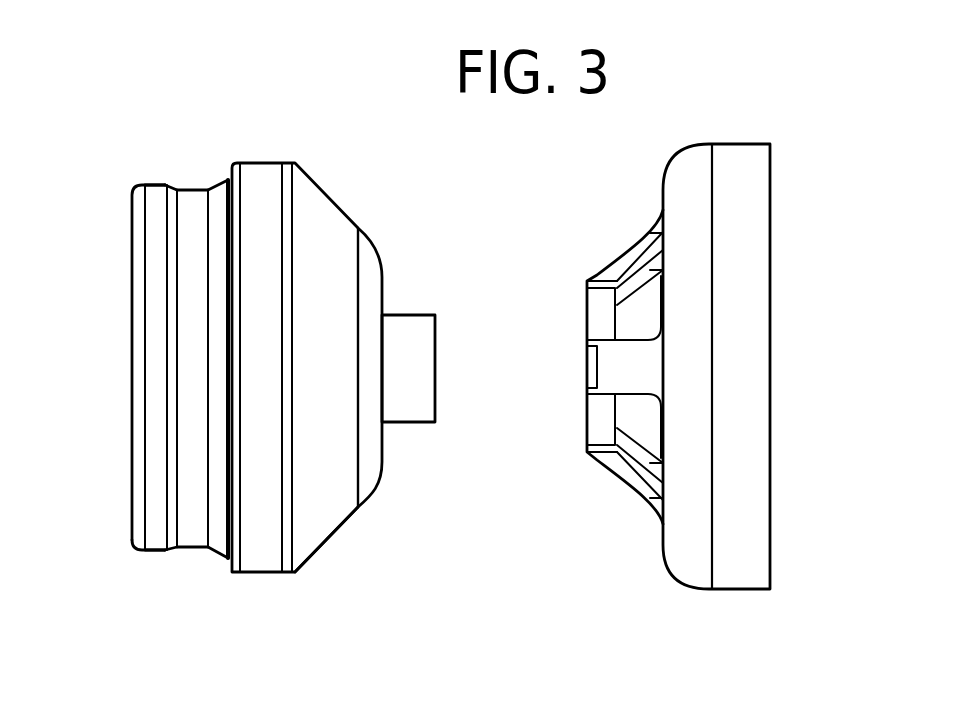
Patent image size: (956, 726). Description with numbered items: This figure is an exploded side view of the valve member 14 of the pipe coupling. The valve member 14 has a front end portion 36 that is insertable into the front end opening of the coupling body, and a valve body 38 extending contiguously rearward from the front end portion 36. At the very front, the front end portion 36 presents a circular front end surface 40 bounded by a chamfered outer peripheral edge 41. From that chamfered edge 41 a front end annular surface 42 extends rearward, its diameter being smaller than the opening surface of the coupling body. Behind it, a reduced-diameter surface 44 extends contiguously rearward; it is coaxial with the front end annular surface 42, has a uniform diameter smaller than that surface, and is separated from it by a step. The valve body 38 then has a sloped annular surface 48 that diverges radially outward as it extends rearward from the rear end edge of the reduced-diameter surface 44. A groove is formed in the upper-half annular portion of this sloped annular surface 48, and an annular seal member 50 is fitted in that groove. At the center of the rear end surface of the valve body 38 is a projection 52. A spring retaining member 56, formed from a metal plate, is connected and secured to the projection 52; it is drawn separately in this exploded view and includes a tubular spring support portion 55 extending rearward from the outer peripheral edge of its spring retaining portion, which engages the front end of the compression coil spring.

The valve member 14 is at (194, 600).
The front end portion 36 is at (155, 552).
The valve body 38 is at (332, 533).
The circular front end surface 40 is at (132, 305).
The chamfered outer peripheral edge 41 is at (140, 185).
The front end annular surface 42 is at (155, 185).
The reduced-diameter surface 44 is at (193, 187).
The sloped annular surface 48 is at (218, 185).
The annular seal member 50 is at (260, 233).
The projection 52 is at (417, 315).
The tubular spring support portion 55 is at (737, 590).
The spring retaining member 56 is at (748, 125).